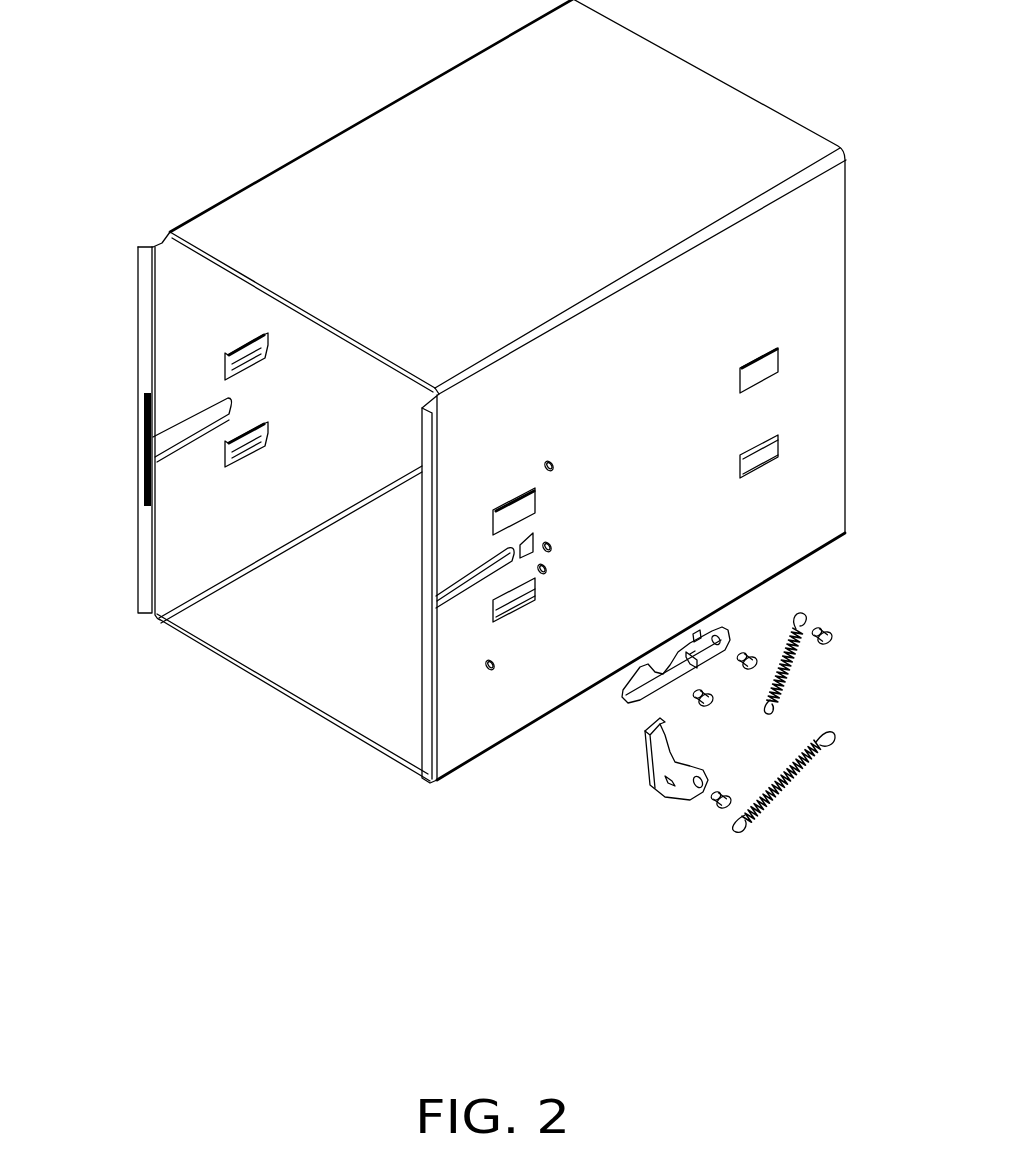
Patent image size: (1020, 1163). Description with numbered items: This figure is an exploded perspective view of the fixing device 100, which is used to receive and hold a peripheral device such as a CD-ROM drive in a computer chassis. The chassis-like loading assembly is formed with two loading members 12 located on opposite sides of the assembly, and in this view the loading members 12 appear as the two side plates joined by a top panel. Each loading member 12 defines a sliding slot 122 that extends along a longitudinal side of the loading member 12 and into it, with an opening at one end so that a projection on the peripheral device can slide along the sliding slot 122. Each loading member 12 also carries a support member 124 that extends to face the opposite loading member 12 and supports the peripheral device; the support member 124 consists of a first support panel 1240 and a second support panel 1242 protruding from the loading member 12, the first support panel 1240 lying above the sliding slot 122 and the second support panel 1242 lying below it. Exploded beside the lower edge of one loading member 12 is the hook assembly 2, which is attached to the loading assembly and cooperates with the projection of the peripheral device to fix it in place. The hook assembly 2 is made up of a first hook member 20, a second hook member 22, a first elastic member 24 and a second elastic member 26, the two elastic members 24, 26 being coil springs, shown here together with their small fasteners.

The fixing device 100 is at (283, 63).
The loading member 12 is at (183, 273).
The sliding slot 122 is at (445, 592).
The support member 124 is at (148, 764).
The first support panel 1240 is at (155, 437).
The second support panel 1242 is at (225, 357).
The hook assembly 2 is at (886, 572).
The first hook member 20 is at (690, 778).
The second hook member 22 is at (733, 630).
The first elastic member 24 is at (820, 733).
The second elastic member 26 is at (802, 657).